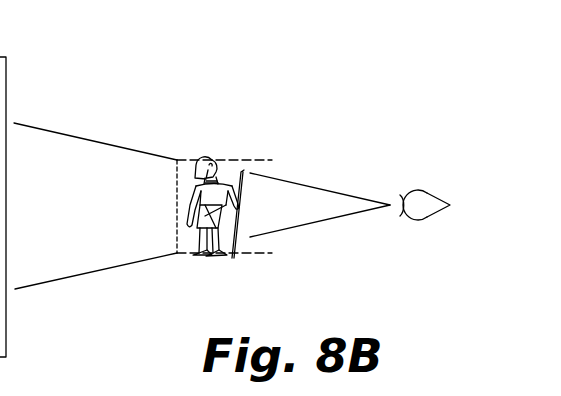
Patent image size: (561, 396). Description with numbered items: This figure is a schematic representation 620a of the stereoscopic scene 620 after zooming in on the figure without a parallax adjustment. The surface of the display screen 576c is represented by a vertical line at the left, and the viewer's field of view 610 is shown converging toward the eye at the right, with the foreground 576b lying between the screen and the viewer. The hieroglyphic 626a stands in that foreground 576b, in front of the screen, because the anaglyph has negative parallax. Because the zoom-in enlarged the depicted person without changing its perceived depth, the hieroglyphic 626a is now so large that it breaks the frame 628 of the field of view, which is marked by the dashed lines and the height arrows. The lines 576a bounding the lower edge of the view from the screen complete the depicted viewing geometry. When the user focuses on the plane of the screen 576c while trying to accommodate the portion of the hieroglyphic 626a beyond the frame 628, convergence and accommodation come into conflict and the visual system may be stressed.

The stereoscopic scene 620 is at (42, 62).
The schematic representation 620a is at (149, 107).
The hieroglyphic figure 626a is at (177, 193).
The frame 628 is at (255, 150).
The lower ray from display 576a is at (90, 260).
The foreground 576b is at (292, 219).
The display screen surface 576c is at (175, 237).
The field of view 610 is at (328, 190).